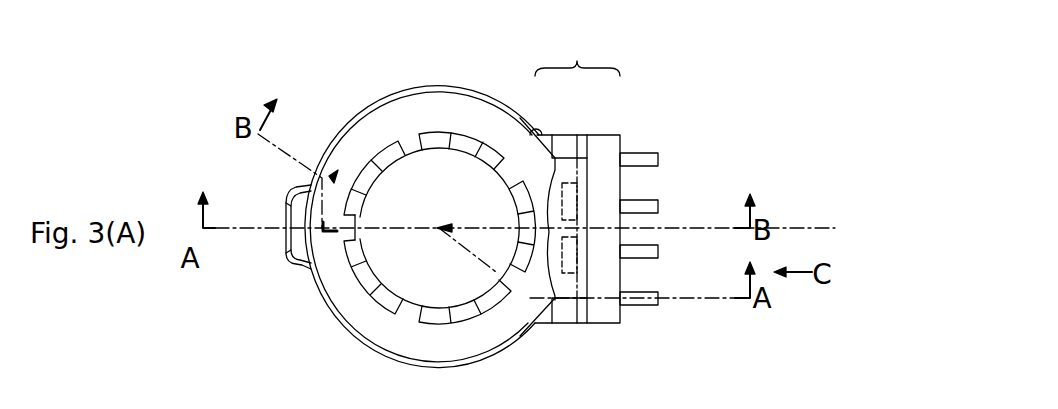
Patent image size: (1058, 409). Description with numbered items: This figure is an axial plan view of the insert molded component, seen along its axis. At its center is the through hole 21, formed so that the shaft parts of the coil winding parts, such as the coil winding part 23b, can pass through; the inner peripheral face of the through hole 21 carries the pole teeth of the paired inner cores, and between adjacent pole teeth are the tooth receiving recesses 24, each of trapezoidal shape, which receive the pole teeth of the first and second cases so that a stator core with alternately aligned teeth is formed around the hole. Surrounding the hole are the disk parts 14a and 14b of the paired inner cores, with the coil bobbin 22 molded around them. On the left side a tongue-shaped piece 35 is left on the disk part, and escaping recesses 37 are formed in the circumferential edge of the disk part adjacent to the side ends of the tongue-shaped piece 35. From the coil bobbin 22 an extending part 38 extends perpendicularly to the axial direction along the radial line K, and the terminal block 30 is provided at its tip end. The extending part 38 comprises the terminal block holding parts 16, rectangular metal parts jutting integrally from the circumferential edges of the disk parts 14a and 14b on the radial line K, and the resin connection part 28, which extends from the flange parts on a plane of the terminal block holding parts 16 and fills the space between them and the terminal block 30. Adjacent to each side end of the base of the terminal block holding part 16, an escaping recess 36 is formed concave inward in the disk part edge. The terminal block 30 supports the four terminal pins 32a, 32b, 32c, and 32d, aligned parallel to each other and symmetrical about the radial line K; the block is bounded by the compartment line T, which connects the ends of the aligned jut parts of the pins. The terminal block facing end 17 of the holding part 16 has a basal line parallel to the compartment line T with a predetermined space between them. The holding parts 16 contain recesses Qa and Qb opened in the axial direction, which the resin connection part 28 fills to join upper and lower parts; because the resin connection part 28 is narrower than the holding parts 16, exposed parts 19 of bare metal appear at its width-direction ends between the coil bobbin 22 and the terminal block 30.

The disk part 14b is at (424, 88).
The disk part 14a is at (288, 228).
The coil bobbin 22 is at (365, 134).
The tooth receiving recess 24 is at (437, 140).
The through hole 21 is at (419, 311).
The coil winding part 23b is at (320, 312).
The tongue-shaped piece 35 is at (285, 253).
The escaping recess 37 is at (298, 272).
The escaping recess 36 is at (545, 138).
The exposed part 19 is at (533, 128).
The extending part 38 is at (577, 53).
The terminal block holding part 16 is at (560, 135).
The resin connection part 28 is at (580, 135).
The terminal block 30 is at (615, 133).
The terminal pin 32a is at (658, 160).
The terminal pin 32b is at (658, 207).
The terminal pin 32c is at (658, 252).
The terminal pin 32d is at (658, 299).
The terminal block facing end 17 is at (622, 177).
The compartment line T is at (622, 270).
The radial line K is at (525, 215).
The recess Qa is at (578, 253).
The recess Qb is at (578, 199).